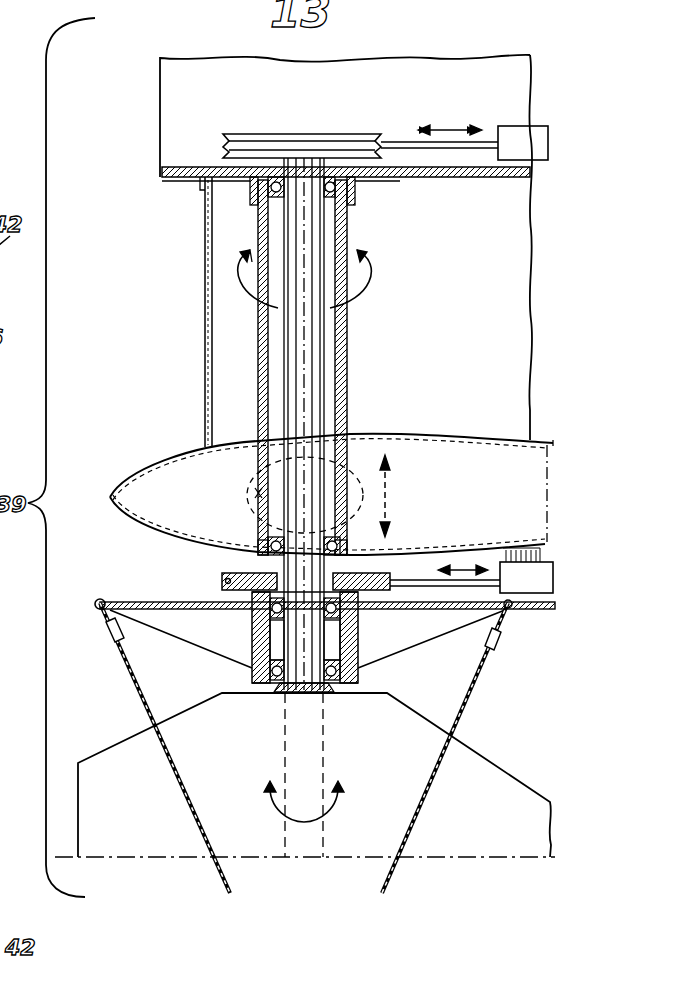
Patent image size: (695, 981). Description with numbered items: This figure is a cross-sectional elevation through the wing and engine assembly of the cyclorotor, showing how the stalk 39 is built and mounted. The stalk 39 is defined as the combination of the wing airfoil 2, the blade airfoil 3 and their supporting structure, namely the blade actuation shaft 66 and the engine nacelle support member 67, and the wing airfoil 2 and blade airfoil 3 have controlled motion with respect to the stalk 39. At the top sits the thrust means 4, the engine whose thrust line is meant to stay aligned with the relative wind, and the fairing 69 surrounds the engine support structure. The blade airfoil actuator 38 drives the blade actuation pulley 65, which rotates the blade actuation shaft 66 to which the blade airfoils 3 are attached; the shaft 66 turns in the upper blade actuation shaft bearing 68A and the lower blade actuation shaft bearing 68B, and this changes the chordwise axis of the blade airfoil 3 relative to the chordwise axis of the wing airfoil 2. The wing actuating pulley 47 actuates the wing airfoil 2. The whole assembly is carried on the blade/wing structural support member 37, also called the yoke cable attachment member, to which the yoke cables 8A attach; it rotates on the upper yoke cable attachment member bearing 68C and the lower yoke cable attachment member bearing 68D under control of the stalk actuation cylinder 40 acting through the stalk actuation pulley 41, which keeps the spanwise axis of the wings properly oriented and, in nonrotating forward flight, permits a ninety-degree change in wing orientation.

The wing airfoil 2 is at (140, 490).
The blade airfoil 3 is at (130, 770).
The thrust means 4 is at (201, 108).
The yoke cables 8A is at (143, 692).
The blade/wing structural support member 37 is at (138, 597).
The blade airfoil actuator 38 is at (520, 150).
The stalk 39 is at (252, 642).
The stalk actuation cylinder 40 is at (516, 612).
The stalk actuation pulley 41 is at (225, 575).
The wing actuating pulley 47 is at (257, 493).
The blade actuation pulley 65 is at (280, 110).
The blade actuation shaft 66 is at (303, 234).
The engine nacelle support member 67 is at (345, 237).
The upper blade actuation shaft bearing 68A is at (338, 197).
The lower blade actuation shaft bearing 68B is at (272, 545).
The upper yoke cable attachment member bearing 68C is at (358, 625).
The lower yoke cable attachment member bearing 68D is at (270, 665).
The fairing 69 is at (205, 313).